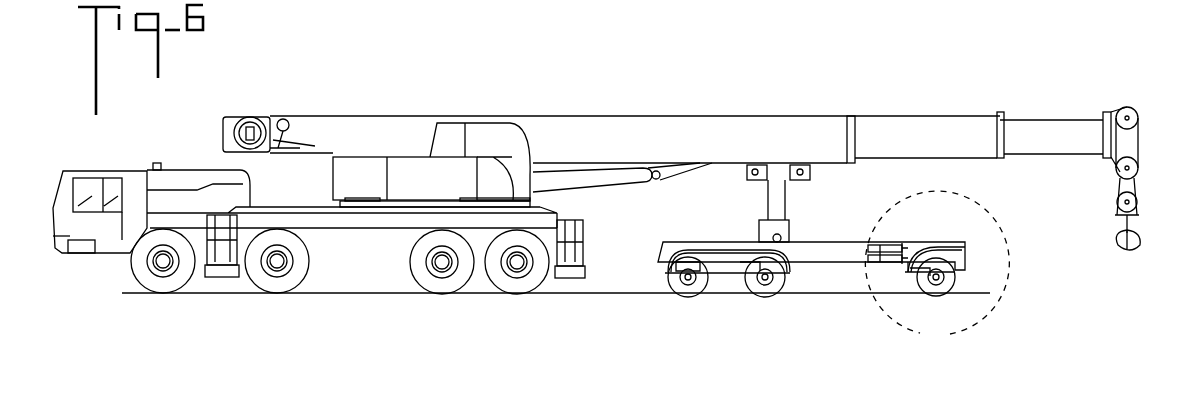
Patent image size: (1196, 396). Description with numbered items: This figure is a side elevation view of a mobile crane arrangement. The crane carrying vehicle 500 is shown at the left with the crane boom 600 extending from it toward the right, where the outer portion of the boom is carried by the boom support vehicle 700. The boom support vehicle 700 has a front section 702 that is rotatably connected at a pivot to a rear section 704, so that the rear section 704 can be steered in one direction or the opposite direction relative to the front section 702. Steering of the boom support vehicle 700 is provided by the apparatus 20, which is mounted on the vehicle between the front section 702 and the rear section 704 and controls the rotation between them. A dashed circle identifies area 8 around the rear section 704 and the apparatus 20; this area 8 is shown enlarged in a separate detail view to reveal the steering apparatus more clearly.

The crane carrying vehicle 500 is at (82, 153).
The crane boom 600 is at (893, 138).
The boom support vehicle 700 is at (737, 226).
The front section 702 is at (830, 247).
The apparatus for steering boom support vehicle 20 is at (886, 224).
The rear section 704 is at (932, 247).
The area 8 is at (937, 270).